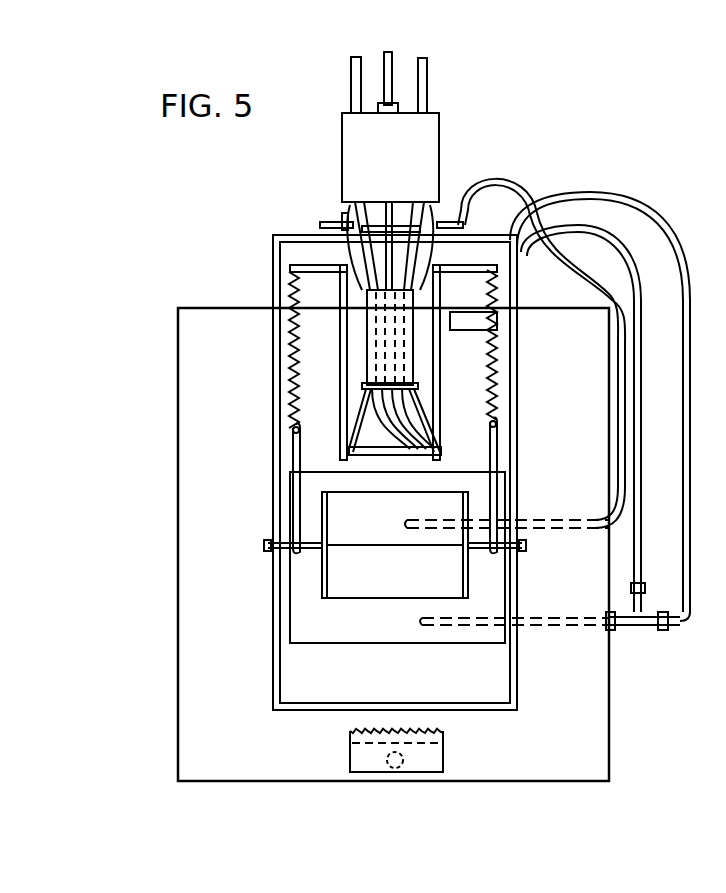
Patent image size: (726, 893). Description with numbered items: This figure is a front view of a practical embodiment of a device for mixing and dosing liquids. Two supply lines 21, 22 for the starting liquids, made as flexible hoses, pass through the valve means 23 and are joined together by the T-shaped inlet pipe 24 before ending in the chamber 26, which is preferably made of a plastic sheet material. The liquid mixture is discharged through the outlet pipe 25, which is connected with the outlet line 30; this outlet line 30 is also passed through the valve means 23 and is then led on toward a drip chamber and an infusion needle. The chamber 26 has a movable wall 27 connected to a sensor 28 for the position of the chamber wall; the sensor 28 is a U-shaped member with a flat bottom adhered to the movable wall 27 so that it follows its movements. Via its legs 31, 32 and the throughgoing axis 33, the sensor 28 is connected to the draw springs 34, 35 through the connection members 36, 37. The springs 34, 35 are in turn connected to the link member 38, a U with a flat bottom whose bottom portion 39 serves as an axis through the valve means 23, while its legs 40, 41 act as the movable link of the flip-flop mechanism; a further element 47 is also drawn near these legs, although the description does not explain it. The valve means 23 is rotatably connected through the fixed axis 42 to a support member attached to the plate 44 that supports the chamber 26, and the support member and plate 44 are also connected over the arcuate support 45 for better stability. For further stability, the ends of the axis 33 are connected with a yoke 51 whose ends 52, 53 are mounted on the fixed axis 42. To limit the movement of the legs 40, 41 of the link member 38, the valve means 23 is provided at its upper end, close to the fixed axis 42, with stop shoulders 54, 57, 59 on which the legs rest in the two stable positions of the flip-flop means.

The supply line 21 is at (350, 80).
The supply line 22 is at (428, 80).
The valve means 23 is at (372, 360).
The T-shaped inlet pipe 24 is at (637, 630).
The outlet pipe 25 is at (618, 400).
The chamber 26 is at (393, 645).
The movable wall 27 is at (358, 640).
The sensor 28 is at (412, 585).
The outlet line 30 is at (385, 60).
The leg 31 is at (470, 568).
The leg 32 is at (325, 568).
The throughgoing axis 33 is at (380, 545).
The draw spring 34 is at (293, 372).
The draw spring 35 is at (500, 350).
The connection member 36 is at (292, 458).
The connection member 37 is at (500, 450).
The link member 38 is at (276, 238).
The bottom portion 39 is at (350, 450).
The leg 40 is at (358, 380).
The leg 41 is at (440, 372).
The fixed axis 42 is at (335, 226).
The plate 44 is at (258, 772).
The arcuate support 45 is at (342, 140).
The struts 47 is at (356, 414).
The yoke 51 is at (275, 660).
The yoke end 52 is at (438, 200).
The yoke end 53 is at (340, 220).
The stop shoulder 54 is at (343, 272).
The stop shoulder 57 is at (536, 336).
The stop shoulder 59 is at (292, 288).